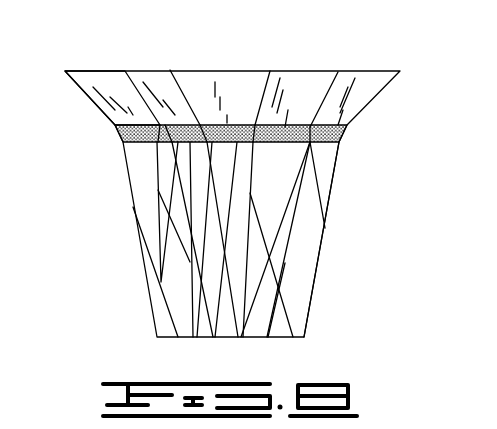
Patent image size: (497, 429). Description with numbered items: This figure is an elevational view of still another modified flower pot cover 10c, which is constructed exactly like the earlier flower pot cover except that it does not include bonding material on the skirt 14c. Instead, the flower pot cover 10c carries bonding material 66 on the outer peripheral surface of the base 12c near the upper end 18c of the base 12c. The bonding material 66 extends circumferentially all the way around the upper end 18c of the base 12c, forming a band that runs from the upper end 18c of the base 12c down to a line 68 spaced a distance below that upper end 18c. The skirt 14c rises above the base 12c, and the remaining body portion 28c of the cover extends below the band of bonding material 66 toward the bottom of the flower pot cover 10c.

The flower pot cover 10c is at (322, 276).
The base 12c is at (307, 233).
The skirt 14c is at (113, 80).
The upper end 18c is at (345, 134).
The outer wall 28c is at (332, 188).
The bonding material 66 is at (308, 143).
The line 68 is at (204, 142).